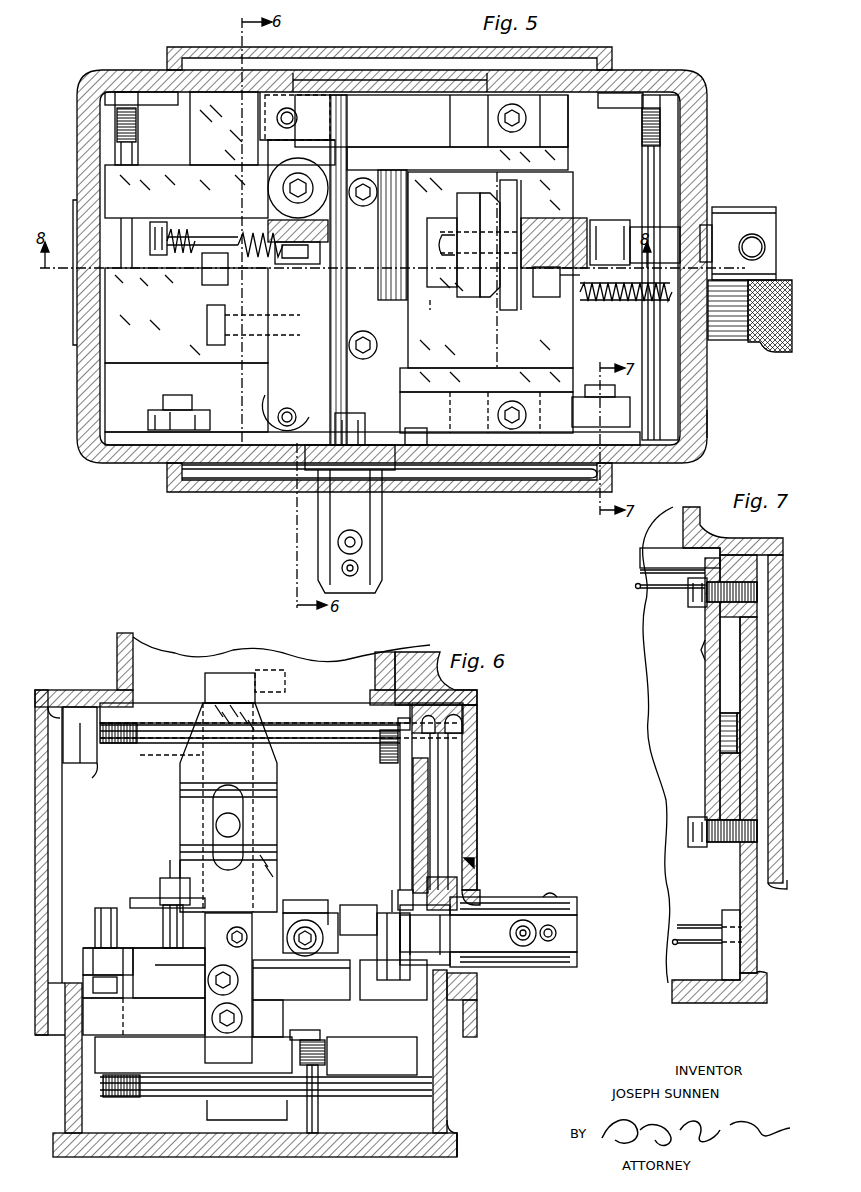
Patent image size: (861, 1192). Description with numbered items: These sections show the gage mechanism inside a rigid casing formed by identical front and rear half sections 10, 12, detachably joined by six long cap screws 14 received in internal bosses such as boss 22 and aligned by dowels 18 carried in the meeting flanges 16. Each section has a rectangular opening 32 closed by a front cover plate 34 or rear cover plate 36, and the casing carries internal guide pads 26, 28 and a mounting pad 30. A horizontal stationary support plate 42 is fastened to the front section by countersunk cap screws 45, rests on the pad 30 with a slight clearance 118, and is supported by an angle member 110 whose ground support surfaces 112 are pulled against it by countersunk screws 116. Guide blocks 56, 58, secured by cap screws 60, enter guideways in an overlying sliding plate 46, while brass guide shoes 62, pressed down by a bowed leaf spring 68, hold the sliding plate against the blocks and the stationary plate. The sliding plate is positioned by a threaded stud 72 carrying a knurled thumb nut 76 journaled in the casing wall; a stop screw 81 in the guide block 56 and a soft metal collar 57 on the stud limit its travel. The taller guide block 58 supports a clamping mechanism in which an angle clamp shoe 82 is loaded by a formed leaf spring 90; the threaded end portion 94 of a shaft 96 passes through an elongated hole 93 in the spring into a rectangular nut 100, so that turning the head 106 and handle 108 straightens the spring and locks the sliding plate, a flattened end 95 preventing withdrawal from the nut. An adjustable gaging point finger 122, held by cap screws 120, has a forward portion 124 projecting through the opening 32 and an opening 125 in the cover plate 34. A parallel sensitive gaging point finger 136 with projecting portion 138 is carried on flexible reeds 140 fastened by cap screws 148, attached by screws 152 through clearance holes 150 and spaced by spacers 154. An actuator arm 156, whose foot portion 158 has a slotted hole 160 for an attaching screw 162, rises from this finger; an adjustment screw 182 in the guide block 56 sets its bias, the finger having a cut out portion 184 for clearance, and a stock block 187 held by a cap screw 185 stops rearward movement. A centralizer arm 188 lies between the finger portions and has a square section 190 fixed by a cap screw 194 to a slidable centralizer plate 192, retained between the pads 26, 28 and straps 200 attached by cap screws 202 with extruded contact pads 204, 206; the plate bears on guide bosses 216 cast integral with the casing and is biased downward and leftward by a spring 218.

In FIG. 5, the front casing half section 10 is at (707, 413).
In FIG. 6, the front casing half section 10 is at (460, 1145).
In FIG. 7, the front casing half section 10 is at (767, 1003).
In FIG. 5, the rear casing half section 12 is at (707, 118).
In FIG. 6, the rear casing half section 12 is at (55, 1140).
In FIG. 5, the long cap screws 14 is at (135, 158).
In FIG. 6, the long cap screws 14 is at (365, 744).
In FIG. 7, the long cap screws 14 is at (640, 592).
In FIG. 5, the meeting flanges 16 is at (80, 283).
In FIG. 6, the alignment dowels 18 is at (286, 680).
In FIG. 6, the internal boss 22 is at (85, 772).
In FIG. 6, the internal guide pad 26 is at (448, 860).
In FIG. 7, the internal guide pad 26 is at (735, 717).
In FIG. 6, the internal guide pad 28 is at (464, 805).
In FIG. 6, the mounting pad 30 is at (425, 1045).
In FIG. 5, the rectangular opening 32 is at (483, 82).
In FIG. 6, the rectangular opening 32 is at (452, 728).
In FIG. 5, the front cover plate 34 is at (562, 493).
In FIG. 6, the front cover plate 34 is at (478, 773).
In FIG. 7, the front cover plate 34 is at (783, 882).
In FIG. 5, the rear cover plate 36 is at (184, 46).
In FIG. 6, the rear cover plate 36 is at (40, 697).
In FIG. 5, the stationary support plate 42 is at (568, 132).
In FIG. 6, the stationary support plate 42 is at (147, 1037).
In FIG. 6, the countersunk head cap screws 45 is at (388, 1040).
In FIG. 5, the sliding plate 46 is at (432, 170).
In FIG. 6, the sliding plate 46 is at (345, 976).
In FIG. 5, the guide block 56 is at (207, 232).
In FIG. 6, the guide block 56 is at (207, 1050).
In FIG. 5, the soft metal collar 57 is at (575, 316).
In FIG. 5, the guide block 58 is at (576, 219).
In FIG. 6, the guide block 58 is at (200, 763).
In FIG. 6, the cap screws 60 is at (208, 1038).
In FIG. 5, the brass guide shoes 62 is at (205, 290).
In FIG. 6, the bowed leaf spring 68 is at (303, 1050).
In FIG. 5, the screw threaded stud 72 is at (605, 310).
In FIG. 5, the knurled thumb nut 76 is at (758, 351).
In FIG. 5, the adjustable stop screw 81 is at (158, 222).
In FIG. 6, the adjustable stop screw 81 is at (210, 1003).
In FIG. 5, the angle clamp shoe 82 is at (490, 315).
In FIG. 6, the formed leaf spring 90 is at (278, 782).
In FIG. 6, the vertically elongated hole 93 is at (232, 793).
In FIG. 5, the threaded end portion 94 is at (456, 226).
In FIG. 6, the threaded end portion 94 is at (216, 832).
In FIG. 5, the flattened end 95 is at (437, 247).
In FIG. 5, the shaft 96 is at (636, 222).
In FIG. 5, the rectangular nut 100 is at (484, 297).
In FIG. 6, the rectangular nut 100 is at (278, 822).
In FIG. 5, the head 106 is at (735, 207).
In FIG. 5, the handle 108 is at (752, 236).
In FIG. 6, the angle member 110 is at (248, 1118).
In FIG. 6, the support surfaces 112 is at (312, 1046).
In FIG. 6, the countersunk head screws 116 is at (322, 1108).
In FIG. 6, the clearance 118 is at (62, 1068).
In FIG. 5, the cap screws 120 is at (362, 206).
In FIG. 5, the adjustable gaging point finger 122 is at (400, 320).
In FIG. 6, the adjustable gaging point finger 122 is at (318, 920).
In FIG. 5, the forwardly extending portion 124 is at (380, 558).
In FIG. 6, the forwardly extending portion 124 is at (540, 966).
In FIG. 6, the opening 125 is at (475, 865).
In FIG. 5, the sensitive gaging point finger 136 is at (270, 370).
In FIG. 6, the sensitive gaging point finger 136 is at (355, 912).
In FIG. 5, the projecting forward portion 138 is at (318, 525).
In FIG. 6, the projecting forward portion 138 is at (483, 966).
In FIG. 5, the flexible reeds 140 is at (400, 145).
In FIG. 6, the flexible reeds 140 is at (140, 976).
In FIG. 5, the cap screws 148 is at (498, 118).
In FIG. 6, the clearance holes 150 is at (120, 1015).
In FIG. 5, the screws 152 is at (296, 111).
In FIG. 6, the screws 152 is at (110, 938).
In FIG. 5, the spacers 154 is at (298, 128).
In FIG. 6, the spacers 154 is at (140, 975).
In FIG. 6, the actuator arm 156 is at (222, 870).
In FIG. 5, the foot portion 158 is at (268, 150).
In FIG. 6, the foot portion 158 is at (150, 905).
In FIG. 5, the slotted hole 160 is at (280, 157).
In FIG. 5, the attaching screw 162 is at (268, 192).
In FIG. 6, the attaching screw 162 is at (175, 878).
In FIG. 6, the horizontal adjustment screw 182 is at (240, 926).
In FIG. 5, the cut out portion 184 is at (295, 268).
In FIG. 5, the cap screw 185 is at (208, 325).
In FIG. 6, the cap screw 185 is at (283, 925).
In FIG. 5, the stock block 187 is at (235, 345).
In FIG. 6, the stock block 187 is at (328, 912).
In FIG. 5, the centralizer arm 188 is at (370, 530).
In FIG. 6, the centralizer arm 188 is at (498, 897).
In FIG. 5, the square section 190 is at (383, 472).
In FIG. 6, the square section 190 is at (462, 879).
In FIG. 5, the centralizer plate 192 is at (440, 418).
In FIG. 6, the centralizer plate 192 is at (412, 826).
In FIG. 7, the centralizer plate 192 is at (720, 716).
In FIG. 5, the cap screw 194 is at (348, 412).
In FIG. 6, the cap screw 194 is at (392, 890).
In FIG. 6, the straps 200 is at (400, 791).
In FIG. 7, the straps 200 is at (705, 673).
In FIG. 7, the cap screws 202 is at (690, 596).
In FIG. 7, the extruded contact pad 204 is at (705, 652).
In FIG. 7, the extruded contact pad 206 is at (720, 734).
In FIG. 7, the guide bosses 216 is at (728, 786).
In FIG. 5, the spring 218 is at (462, 479).